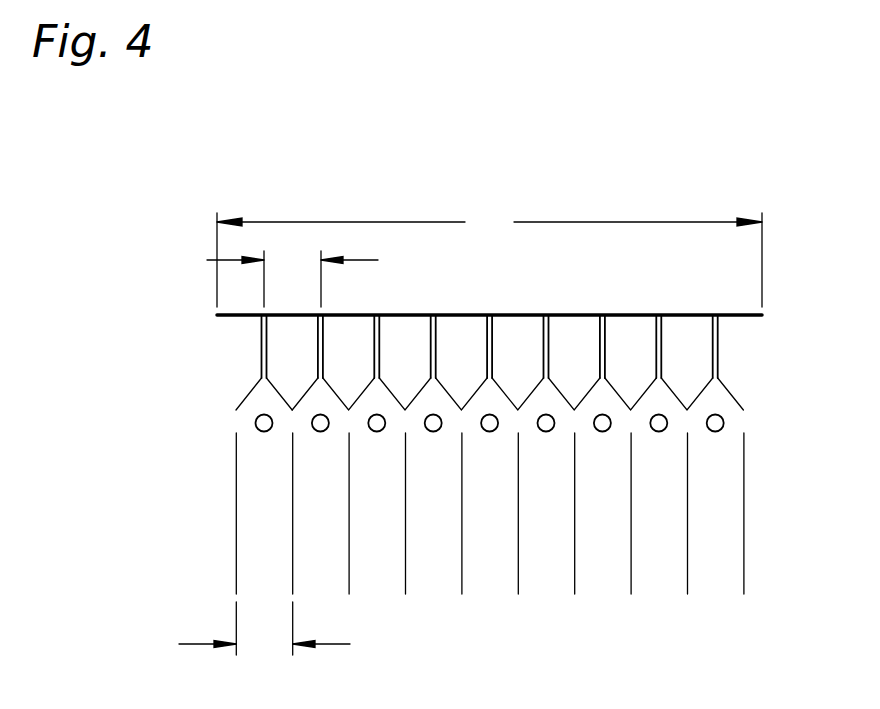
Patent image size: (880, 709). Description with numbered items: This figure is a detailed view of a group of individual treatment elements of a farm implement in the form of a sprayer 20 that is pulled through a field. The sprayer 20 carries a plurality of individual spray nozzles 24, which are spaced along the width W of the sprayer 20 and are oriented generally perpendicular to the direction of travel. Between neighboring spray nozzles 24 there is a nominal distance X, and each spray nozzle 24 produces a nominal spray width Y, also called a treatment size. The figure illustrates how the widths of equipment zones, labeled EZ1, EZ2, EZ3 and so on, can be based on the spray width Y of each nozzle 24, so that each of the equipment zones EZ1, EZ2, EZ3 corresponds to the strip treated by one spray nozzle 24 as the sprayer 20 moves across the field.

The sprayer 20 is at (622, 314).
The spray nozzle 24 is at (261, 355).
The width W is at (489, 258).
The distance X is at (292, 277).
The spray width Y is at (264, 630).
The equipment zone EZ1 is at (264, 513).
The equipment zone EZ2 is at (324, 513).
The equipment zone EZ3 is at (381, 513).